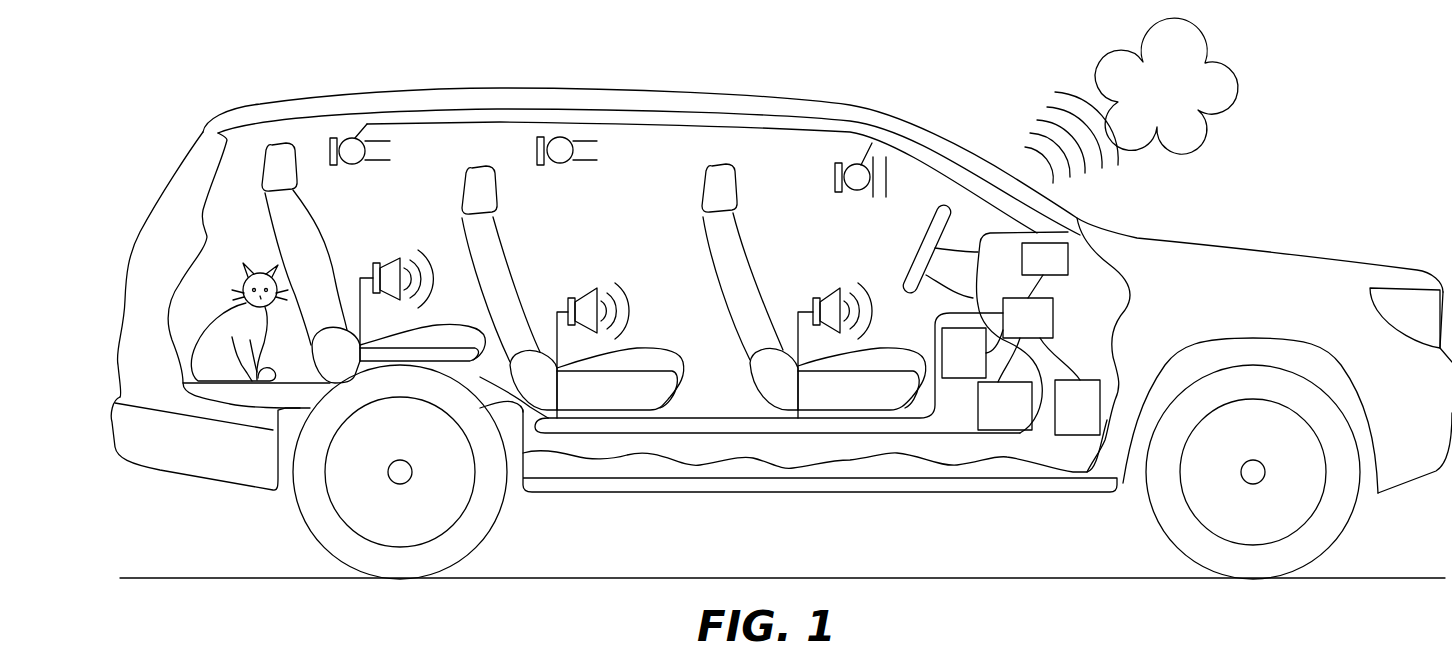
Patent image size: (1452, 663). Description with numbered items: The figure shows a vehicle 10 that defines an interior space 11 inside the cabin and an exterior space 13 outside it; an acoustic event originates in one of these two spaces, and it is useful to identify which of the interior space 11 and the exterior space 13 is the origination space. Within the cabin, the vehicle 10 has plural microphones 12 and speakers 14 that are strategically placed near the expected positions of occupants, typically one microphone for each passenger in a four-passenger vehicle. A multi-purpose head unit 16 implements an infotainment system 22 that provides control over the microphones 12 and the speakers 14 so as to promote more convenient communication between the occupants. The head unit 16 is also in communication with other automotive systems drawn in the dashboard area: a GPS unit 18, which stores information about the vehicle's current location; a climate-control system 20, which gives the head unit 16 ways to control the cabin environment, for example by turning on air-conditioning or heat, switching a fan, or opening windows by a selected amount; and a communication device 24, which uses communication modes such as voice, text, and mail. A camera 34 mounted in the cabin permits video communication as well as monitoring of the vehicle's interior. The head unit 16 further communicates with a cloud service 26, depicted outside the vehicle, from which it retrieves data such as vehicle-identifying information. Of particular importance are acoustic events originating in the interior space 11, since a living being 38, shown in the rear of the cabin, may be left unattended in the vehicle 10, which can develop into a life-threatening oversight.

The vehicle 10 is at (853, 103).
The interior space 11 is at (673, 245).
The microphones 12 is at (565, 163).
The exterior space 13 is at (145, 100).
The speakers 14 is at (390, 257).
The head unit 16 is at (1042, 334).
The GPS unit 18 is at (978, 367).
The climate-control system 20 is at (1019, 418).
The infotainment system 22 is at (1092, 422).
The communication device 24 is at (1059, 272).
The cloud service 26 is at (1180, 103).
The camera 34 is at (857, 190).
The living being 38 is at (262, 270).